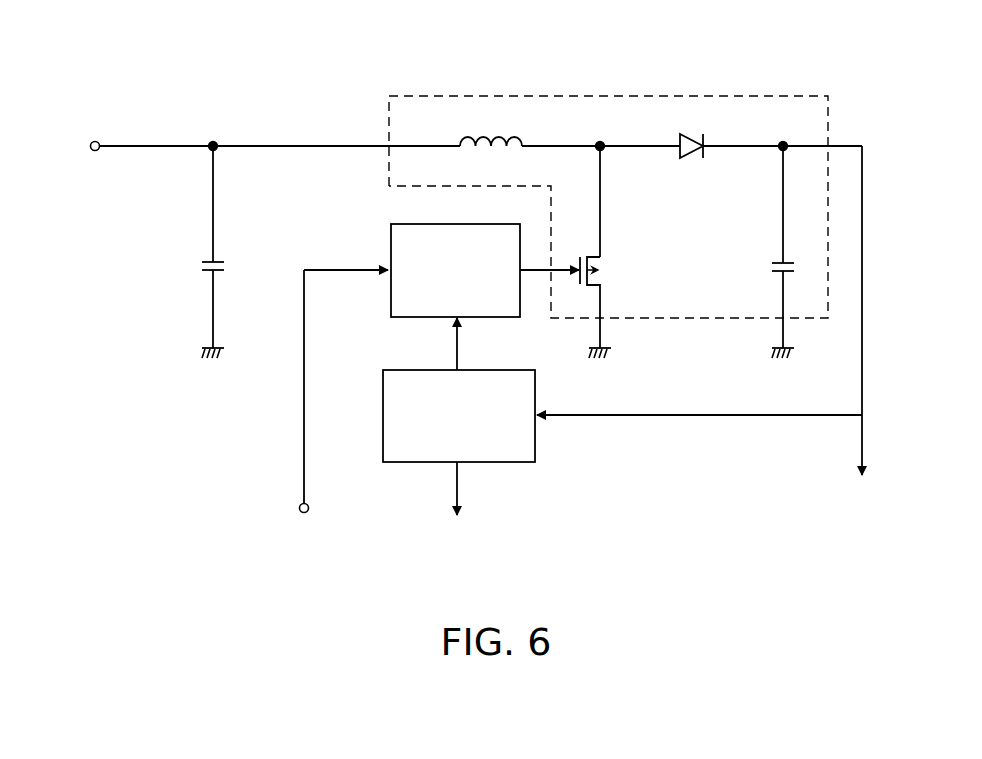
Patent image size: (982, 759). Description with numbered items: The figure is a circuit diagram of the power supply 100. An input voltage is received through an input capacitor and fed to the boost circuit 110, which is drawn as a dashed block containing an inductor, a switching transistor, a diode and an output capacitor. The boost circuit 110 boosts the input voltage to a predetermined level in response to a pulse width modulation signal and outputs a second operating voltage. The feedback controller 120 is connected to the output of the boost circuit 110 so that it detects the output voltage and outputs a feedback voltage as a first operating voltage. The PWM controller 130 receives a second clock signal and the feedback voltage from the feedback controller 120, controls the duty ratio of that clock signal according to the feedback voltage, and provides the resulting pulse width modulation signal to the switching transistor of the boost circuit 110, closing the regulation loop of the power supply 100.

The power supply 100 is at (214, 53).
The boost circuit 110 is at (633, 97).
The feedback controller 120 is at (536, 446).
The PWM controller 130 is at (391, 232).